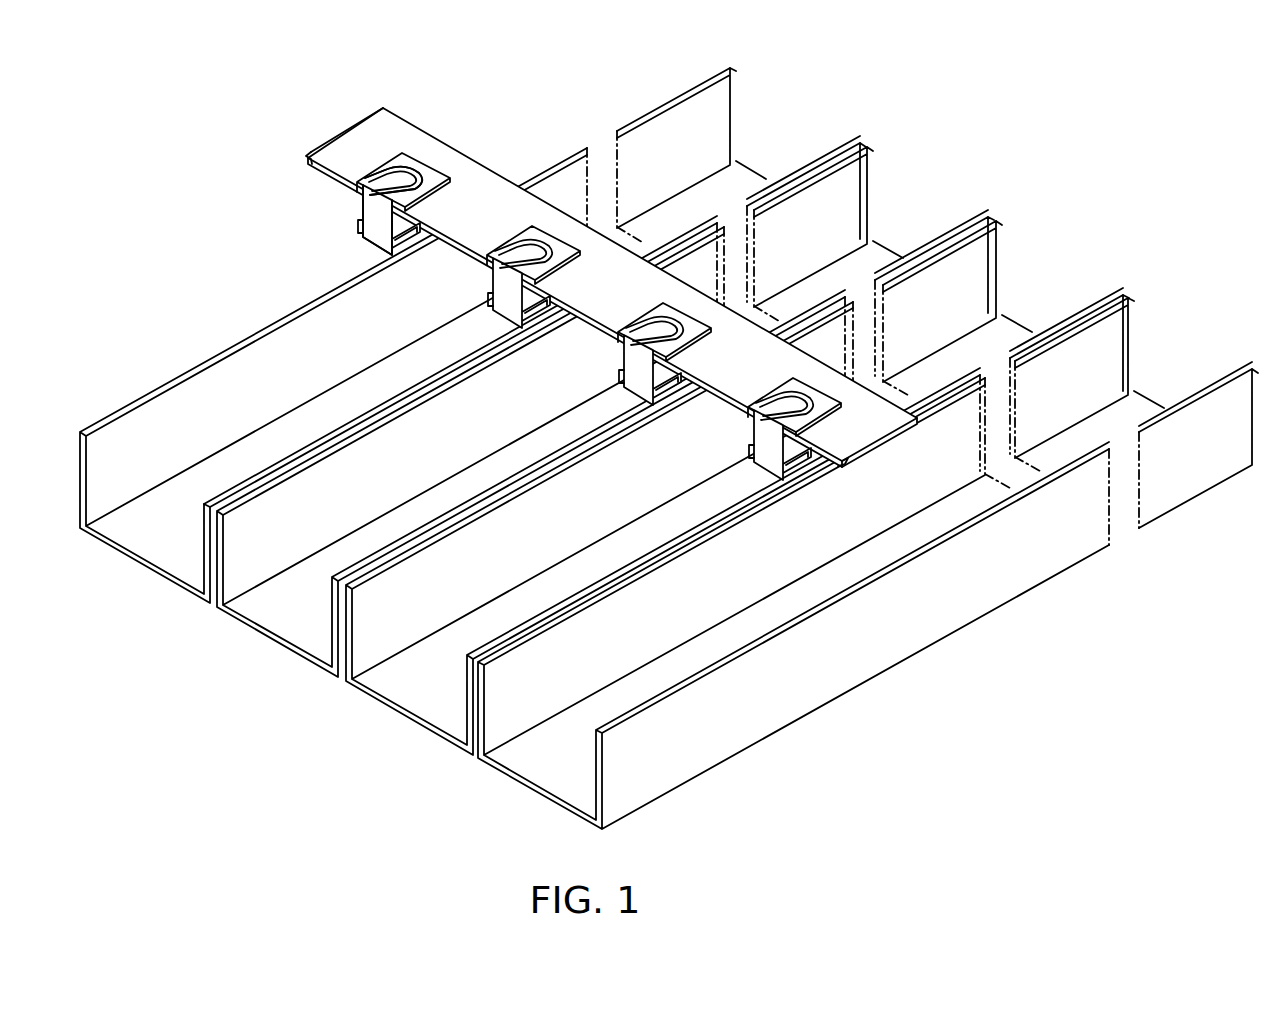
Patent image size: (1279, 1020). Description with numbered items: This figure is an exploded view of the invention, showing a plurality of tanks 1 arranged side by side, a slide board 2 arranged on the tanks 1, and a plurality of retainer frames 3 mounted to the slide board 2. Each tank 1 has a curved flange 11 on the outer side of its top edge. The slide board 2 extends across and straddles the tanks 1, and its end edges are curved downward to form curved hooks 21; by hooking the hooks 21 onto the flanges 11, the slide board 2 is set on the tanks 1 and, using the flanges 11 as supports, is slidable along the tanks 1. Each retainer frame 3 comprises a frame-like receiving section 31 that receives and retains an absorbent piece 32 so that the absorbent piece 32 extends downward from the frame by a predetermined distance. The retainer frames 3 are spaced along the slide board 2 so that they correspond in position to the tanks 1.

The tank 1 is at (669, 448).
The curved flange 11 is at (177, 380).
The slide board 2 is at (628, 358).
The curved hook 21 is at (303, 157).
The retainer frame 3 is at (543, 257).
The receiving section 31 is at (404, 163).
The absorbent piece 32 is at (361, 204).